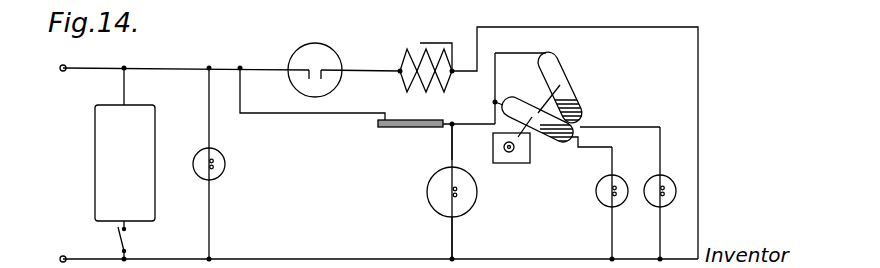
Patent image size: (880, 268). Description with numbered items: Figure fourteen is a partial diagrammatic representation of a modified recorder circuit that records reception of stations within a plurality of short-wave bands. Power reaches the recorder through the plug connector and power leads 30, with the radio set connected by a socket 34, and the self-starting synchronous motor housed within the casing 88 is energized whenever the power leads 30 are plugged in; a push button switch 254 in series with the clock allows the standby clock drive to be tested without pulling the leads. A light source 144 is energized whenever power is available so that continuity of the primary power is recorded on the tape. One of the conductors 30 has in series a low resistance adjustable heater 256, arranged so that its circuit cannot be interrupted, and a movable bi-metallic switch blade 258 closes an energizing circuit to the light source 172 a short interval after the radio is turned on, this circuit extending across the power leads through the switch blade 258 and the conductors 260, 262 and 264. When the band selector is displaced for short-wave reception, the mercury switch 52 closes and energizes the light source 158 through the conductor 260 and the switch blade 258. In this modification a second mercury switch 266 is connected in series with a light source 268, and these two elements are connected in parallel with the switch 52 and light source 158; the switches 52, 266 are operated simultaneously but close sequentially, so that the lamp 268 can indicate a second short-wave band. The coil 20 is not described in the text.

The plug connector 30 is at (73, 72).
The casing 88 is at (123, 191).
The push button switch 254 is at (128, 240).
The light source 144 is at (225, 165).
The socket 34 is at (301, 47).
The conductor 260 is at (294, 113).
The movable bi-metallic switch blade 258 is at (409, 129).
The low resistance adjustable heater 256 is at (439, 46).
The light source 172 is at (427, 193).
The conductor 262 is at (453, 161).
The conductor 264 is at (466, 207).
The solenoid coil 20 is at (512, 163).
The mercury switch 52 is at (565, 148).
The mercury switch 266 is at (566, 85).
The light source 158 is at (598, 198).
The light source 268 is at (664, 175).